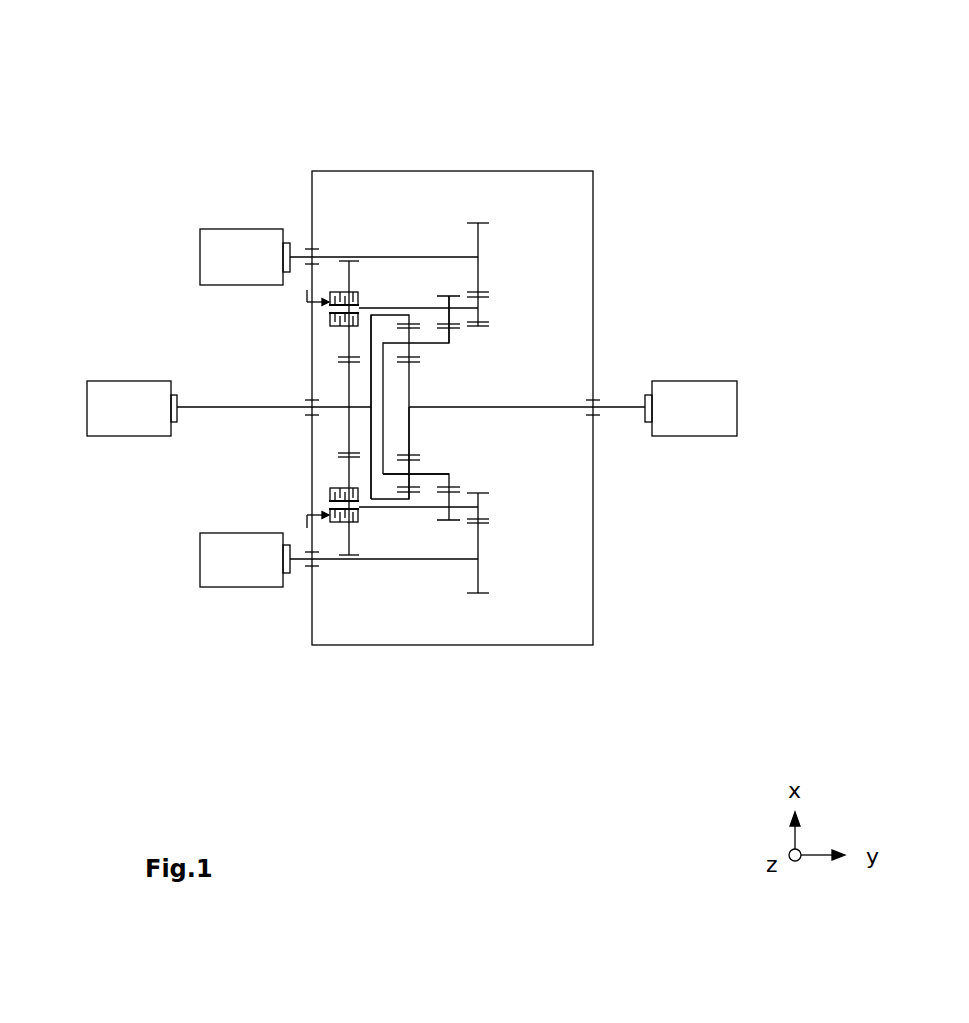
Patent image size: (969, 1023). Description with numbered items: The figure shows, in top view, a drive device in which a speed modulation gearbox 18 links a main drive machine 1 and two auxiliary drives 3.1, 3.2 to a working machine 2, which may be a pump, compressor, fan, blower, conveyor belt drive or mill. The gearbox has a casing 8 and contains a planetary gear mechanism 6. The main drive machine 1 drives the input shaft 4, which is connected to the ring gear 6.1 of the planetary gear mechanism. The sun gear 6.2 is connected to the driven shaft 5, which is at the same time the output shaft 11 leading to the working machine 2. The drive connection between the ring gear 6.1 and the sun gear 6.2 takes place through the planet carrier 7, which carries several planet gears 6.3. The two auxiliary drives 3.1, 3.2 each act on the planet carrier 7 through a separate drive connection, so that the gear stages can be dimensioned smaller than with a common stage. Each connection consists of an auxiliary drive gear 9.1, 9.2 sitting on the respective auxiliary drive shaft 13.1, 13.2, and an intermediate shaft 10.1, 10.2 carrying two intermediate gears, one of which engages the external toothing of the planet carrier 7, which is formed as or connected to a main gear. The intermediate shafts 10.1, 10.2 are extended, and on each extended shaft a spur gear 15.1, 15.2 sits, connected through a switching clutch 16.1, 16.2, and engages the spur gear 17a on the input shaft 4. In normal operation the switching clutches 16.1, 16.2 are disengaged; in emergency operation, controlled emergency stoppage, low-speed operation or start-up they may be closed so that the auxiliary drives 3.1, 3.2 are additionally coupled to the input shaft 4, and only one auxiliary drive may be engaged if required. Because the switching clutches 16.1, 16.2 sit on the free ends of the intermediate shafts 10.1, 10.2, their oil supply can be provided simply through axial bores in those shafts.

The main drive machine 1 is at (120, 381).
The working machine 2 is at (712, 381).
The auxiliary drive 3.1 is at (237, 228).
The auxiliary drive 3.2 is at (220, 587).
The input shaft 4 is at (194, 407).
The driven shaft 5 is at (447, 409).
The planetary gear mechanism 6 is at (440, 373).
The ring gear 6.1 is at (371, 398).
The sun gear 6.2 is at (410, 429).
The planet gears 6.3 is at (470, 333).
The planet carrier 7 is at (450, 479).
The casing 8 is at (515, 171).
The auxiliary drive gear 9.1 is at (481, 248).
The auxiliary drive gear 9.2 is at (481, 580).
The intermediate shaft 10.1 is at (418, 305).
The intermediate shaft 10.2 is at (428, 509).
The output shaft 11 is at (617, 407).
The auxiliary drive shaft 13.1 is at (385, 253).
The auxiliary drive shaft 13.2 is at (398, 562).
The spur gear 15.1 is at (349, 349).
The spur gear 15.2 is at (349, 465).
The switching clutch 16.1 is at (329, 325).
The switching clutch 16.2 is at (329, 500).
The spur gear 17a is at (349, 431).
The speed modulation gearbox 18 is at (578, 362).